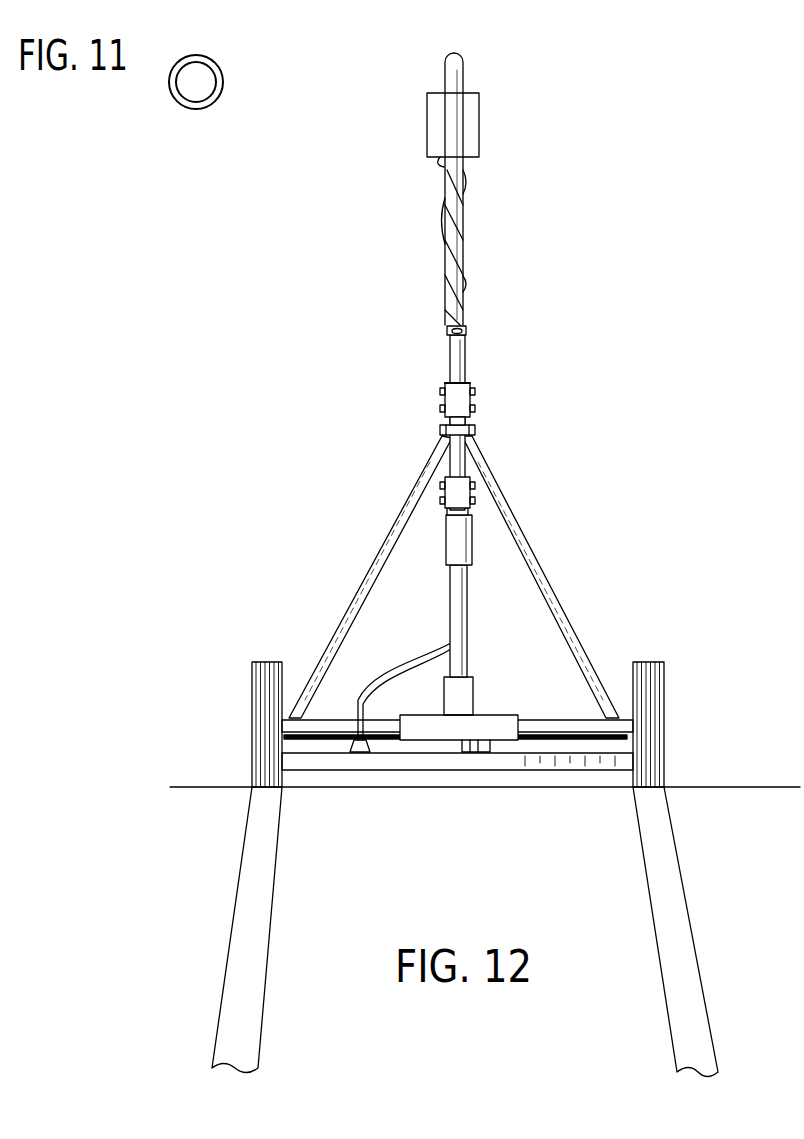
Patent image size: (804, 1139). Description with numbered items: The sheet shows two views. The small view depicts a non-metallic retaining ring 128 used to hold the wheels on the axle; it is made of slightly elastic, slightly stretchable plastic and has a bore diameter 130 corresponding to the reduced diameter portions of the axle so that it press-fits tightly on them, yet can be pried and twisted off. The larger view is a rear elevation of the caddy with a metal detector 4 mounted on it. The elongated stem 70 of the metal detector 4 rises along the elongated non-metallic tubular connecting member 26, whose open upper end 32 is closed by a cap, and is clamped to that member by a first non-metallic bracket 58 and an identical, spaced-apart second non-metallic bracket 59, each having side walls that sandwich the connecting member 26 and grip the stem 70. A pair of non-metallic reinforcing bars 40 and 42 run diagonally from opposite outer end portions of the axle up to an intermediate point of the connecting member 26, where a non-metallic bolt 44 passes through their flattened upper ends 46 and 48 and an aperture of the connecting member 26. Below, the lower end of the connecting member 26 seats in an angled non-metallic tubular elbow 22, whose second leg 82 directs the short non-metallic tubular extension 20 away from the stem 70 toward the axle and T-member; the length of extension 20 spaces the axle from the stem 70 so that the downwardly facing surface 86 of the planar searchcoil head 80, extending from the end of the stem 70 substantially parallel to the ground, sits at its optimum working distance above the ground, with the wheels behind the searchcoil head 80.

In FIG. 12, the metal detector 4 is at (427, 122).
In FIG. 12, the elongated stem 70 is at (465, 222).
In FIG. 12, the open upper end 32 is at (467, 318).
In FIG. 12, the elongated non-metallic tubular connecting member 26 is at (467, 362).
In FIG. 12, the second non-metallic bracket 59 is at (447, 385).
In FIG. 12, the flattened upper end 48 is at (445, 422).
In FIG. 12, the flattened upper end 46 is at (471, 422).
In FIG. 12, the non-metallic bolt 44 is at (440, 433).
In FIG. 12, the first non-metallic bracket 58 is at (468, 477).
In FIG. 12, the angled non-metallic tubular elbow 22 is at (468, 538).
In FIG. 12, the second leg 82 is at (446, 560).
In FIG. 12, the non-metallic tubular extension 20 is at (468, 612).
In FIG. 12, the reinforcing bar 42 is at (362, 582).
In FIG. 12, the reinforcing bar 40 is at (547, 575).
In FIG. 12, the downwardly facing surface 86 is at (405, 772).
In FIG. 12, the planar searchcoil head 80 is at (512, 772).
In FIG. 11, the non-metallic retaining ring 128 is at (214, 62).
In FIG. 11, the bore diameter 130 is at (198, 90).